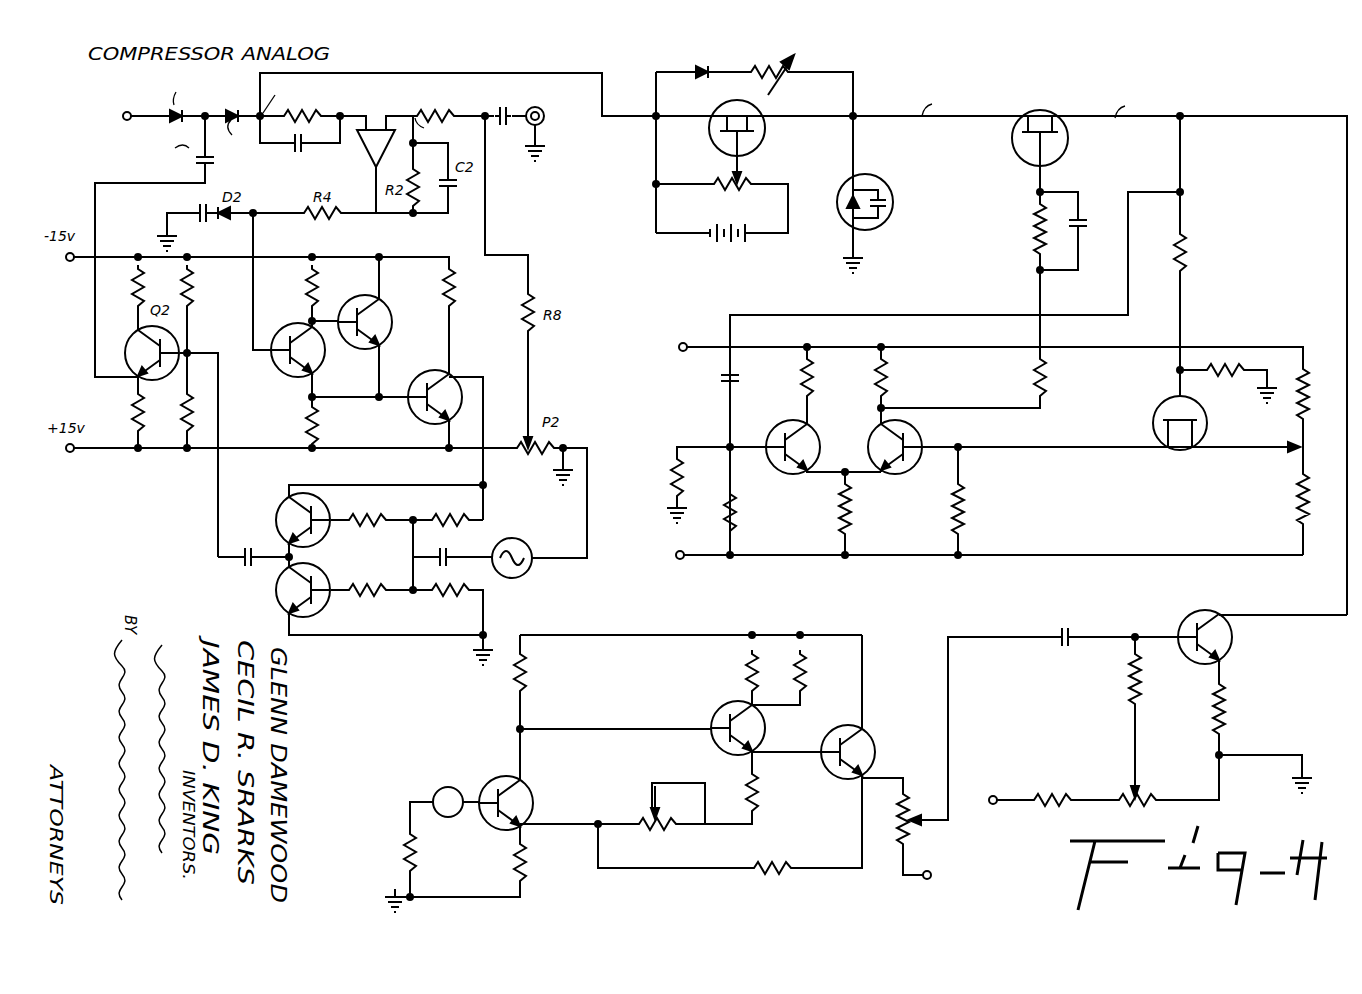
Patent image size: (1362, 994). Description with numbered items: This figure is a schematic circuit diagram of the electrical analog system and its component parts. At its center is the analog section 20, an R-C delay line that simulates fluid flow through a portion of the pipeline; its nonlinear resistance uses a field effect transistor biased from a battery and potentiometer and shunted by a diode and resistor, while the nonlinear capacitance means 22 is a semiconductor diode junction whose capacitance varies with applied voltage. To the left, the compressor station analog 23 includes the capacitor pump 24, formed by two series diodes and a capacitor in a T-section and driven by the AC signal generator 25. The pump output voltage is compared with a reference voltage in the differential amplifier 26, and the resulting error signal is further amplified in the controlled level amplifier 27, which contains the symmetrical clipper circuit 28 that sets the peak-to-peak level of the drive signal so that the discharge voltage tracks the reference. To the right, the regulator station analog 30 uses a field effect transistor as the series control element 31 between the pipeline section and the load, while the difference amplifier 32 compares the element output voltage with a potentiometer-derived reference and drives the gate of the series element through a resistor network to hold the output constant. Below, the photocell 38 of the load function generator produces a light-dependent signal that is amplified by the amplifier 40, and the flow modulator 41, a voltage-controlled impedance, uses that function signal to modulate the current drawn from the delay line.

The analog section 20 is at (816, 146).
The nonlinear capacitance means 22 is at (880, 224).
The compressor station analog 23 is at (382, 70).
The capacitor pump 24 is at (150, 135).
The AC signal generator 25 is at (522, 546).
The differential amplifier 26 is at (377, 130).
The controlled level amplifier 27 is at (352, 384).
The symmetrical clipper circuit 28 is at (362, 561).
The regulator station analog 30 is at (1250, 106).
The series control element 31 is at (1110, 191).
The difference amplifier 32 is at (1047, 494).
The photocell 38 is at (439, 788).
The amplifier 40 is at (642, 709).
The flow modulator 41 is at (1128, 700).